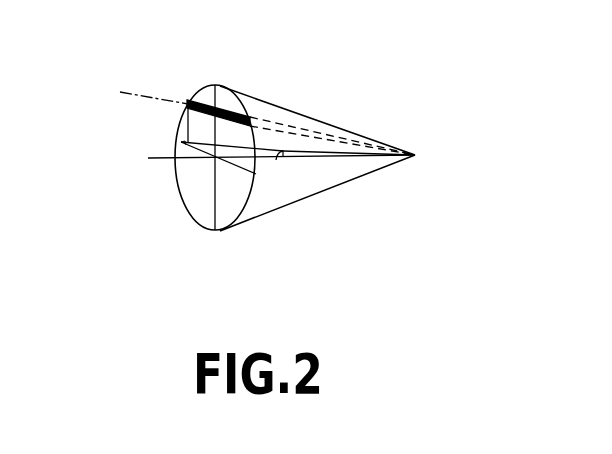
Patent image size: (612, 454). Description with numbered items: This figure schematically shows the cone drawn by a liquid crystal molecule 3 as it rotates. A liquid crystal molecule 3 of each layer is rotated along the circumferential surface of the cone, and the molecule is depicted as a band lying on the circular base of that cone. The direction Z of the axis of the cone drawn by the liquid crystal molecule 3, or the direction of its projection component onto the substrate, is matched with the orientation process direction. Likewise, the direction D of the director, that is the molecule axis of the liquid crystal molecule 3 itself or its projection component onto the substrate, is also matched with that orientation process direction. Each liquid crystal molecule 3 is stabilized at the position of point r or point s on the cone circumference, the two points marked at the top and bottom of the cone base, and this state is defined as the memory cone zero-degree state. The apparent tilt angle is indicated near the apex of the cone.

The liquid crystal molecule 3 is at (190, 105).
The point r is at (215, 110).
The point s is at (215, 206).
The direction of the axis of the cone Z is at (271, 158).
The direction of the director D is at (143, 93).